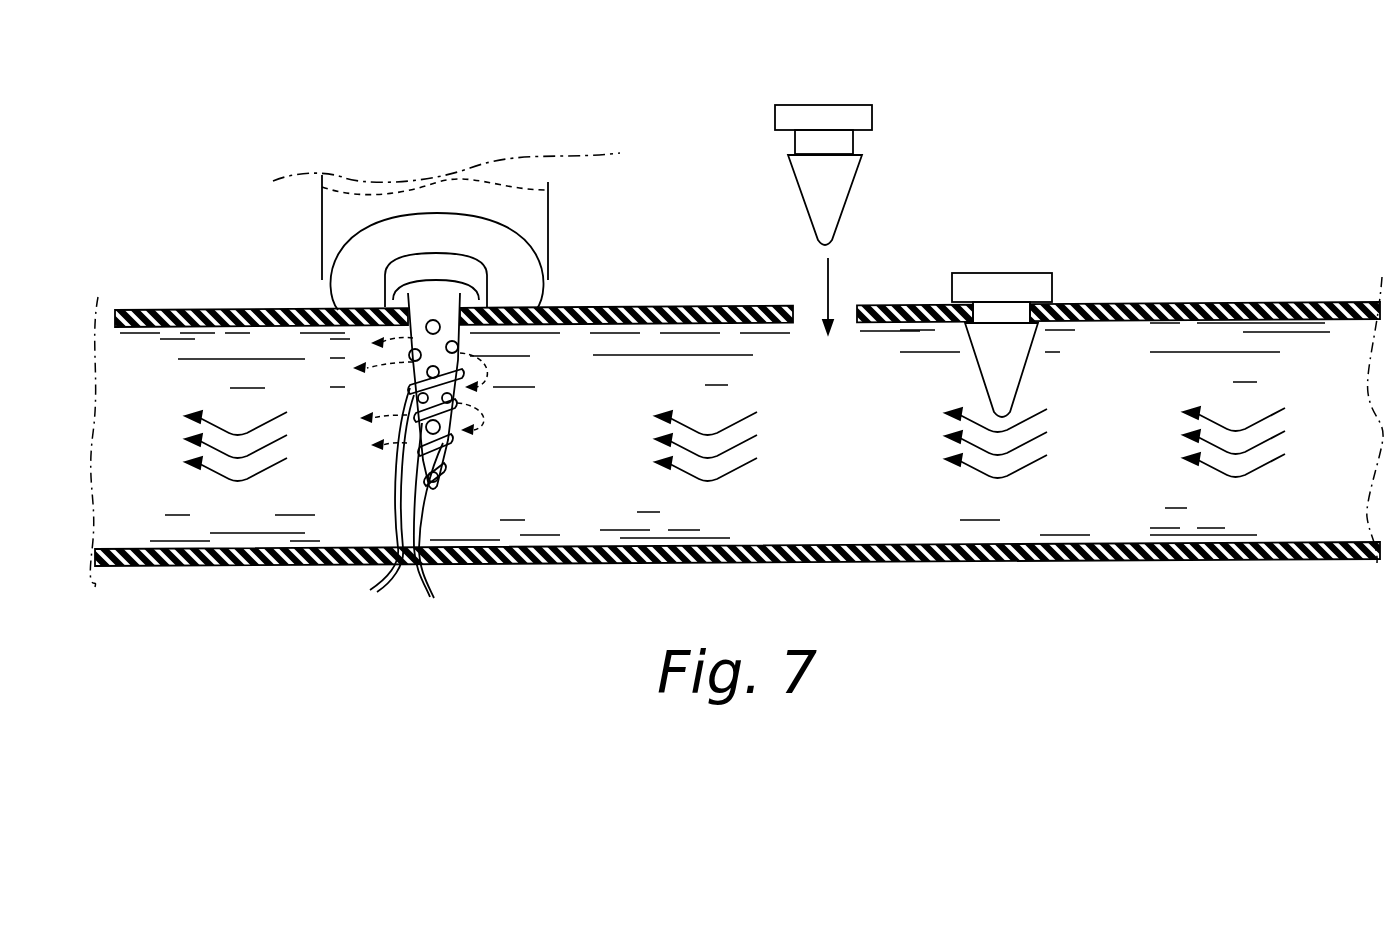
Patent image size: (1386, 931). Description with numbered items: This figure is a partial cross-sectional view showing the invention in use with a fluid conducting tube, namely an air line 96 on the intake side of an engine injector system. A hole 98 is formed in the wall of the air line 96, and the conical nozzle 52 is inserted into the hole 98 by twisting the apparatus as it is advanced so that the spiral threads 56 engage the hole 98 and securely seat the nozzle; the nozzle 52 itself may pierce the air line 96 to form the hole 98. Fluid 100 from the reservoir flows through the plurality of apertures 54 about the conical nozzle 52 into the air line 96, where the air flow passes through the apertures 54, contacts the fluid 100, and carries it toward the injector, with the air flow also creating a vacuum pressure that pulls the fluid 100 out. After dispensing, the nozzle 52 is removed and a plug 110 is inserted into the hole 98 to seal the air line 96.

The air line 96 is at (200, 310).
The hole 98 is at (457, 307).
The fluid 100 is at (527, 212).
The plug 110 is at (850, 182).
The conical nozzle 52 is at (462, 466).
The apertures 54 is at (440, 523).
The spiral threads 56 is at (374, 505).